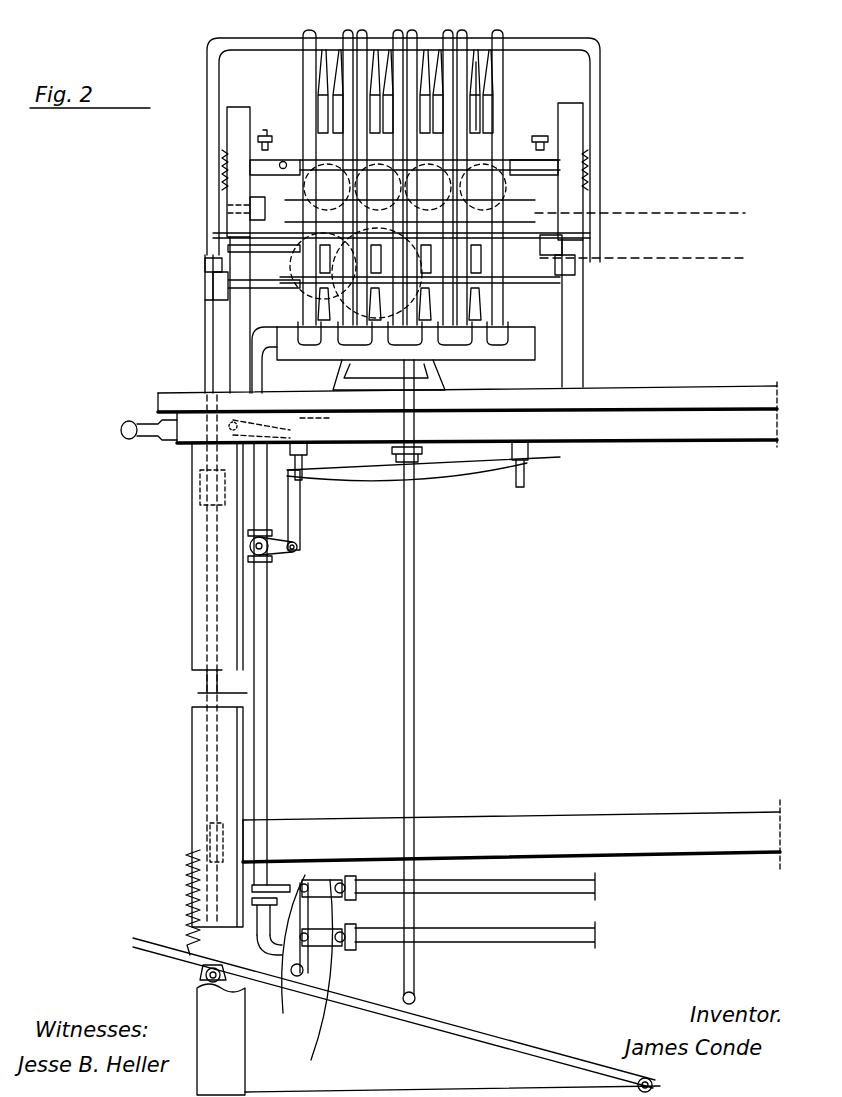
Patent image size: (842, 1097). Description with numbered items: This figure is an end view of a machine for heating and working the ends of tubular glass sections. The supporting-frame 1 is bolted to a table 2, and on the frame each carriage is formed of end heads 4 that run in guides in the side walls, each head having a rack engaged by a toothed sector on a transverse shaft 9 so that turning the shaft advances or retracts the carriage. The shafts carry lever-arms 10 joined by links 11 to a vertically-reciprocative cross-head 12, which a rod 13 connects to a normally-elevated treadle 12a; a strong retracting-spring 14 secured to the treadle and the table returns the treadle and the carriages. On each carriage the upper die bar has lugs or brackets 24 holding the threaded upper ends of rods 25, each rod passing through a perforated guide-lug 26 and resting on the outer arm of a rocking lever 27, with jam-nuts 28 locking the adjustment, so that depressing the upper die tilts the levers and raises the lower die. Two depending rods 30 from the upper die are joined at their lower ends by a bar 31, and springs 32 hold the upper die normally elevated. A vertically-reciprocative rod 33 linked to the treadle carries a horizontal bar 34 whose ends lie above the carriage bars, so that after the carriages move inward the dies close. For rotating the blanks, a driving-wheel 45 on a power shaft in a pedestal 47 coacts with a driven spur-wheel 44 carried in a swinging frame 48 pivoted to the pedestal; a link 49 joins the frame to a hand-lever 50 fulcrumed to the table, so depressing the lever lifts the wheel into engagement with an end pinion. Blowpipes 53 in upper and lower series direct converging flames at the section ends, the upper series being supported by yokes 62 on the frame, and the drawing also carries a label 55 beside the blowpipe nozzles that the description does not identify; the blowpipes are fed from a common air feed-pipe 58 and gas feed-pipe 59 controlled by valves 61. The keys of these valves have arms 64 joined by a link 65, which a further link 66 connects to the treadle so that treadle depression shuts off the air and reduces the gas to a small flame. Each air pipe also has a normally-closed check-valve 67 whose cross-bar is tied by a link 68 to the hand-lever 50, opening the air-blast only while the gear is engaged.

The supporting-frame 1 is at (238, 323).
The table 2 is at (666, 400).
The end heads 4 is at (238, 117).
The transverse shaft 9 is at (478, 70).
The lever-arms 10 is at (222, 270).
The links 11 is at (212, 350).
The cross-head 12 is at (200, 487).
The treadle 12a is at (362, 1000).
The rod 13 is at (210, 680).
The retracting-spring 14 is at (185, 900).
The lugs or brackets 24 is at (255, 167).
The rod 25 is at (228, 200).
The perforated guide-lug 26 is at (215, 235).
The rocking lever 27 is at (570, 258).
The jam-nuts 28 is at (266, 142).
The depending rods 30 is at (307, 456).
The bar 31 is at (468, 476).
The springs 32 is at (215, 178).
The vertically-reciprocative rod 33 is at (416, 680).
The horizontal bar 34 is at (415, 465).
The driven spur-wheel 44 is at (245, 250).
The driving-wheel 45 is at (395, 345).
The pedestal 47 is at (362, 393).
The swinging frame 48 is at (262, 275).
The link 49 is at (265, 367).
The hand-lever 50 is at (162, 440).
The blowpipes 53 is at (478, 125).
The finger 55 is at (405, 105).
The air feed-pipe 58 is at (267, 632).
The gas feed-pipe 59 is at (597, 888).
The valves 61 is at (350, 882).
The yokes 62 is at (548, 44).
The arms 64 is at (320, 880).
The link 65 is at (290, 957).
The link 66 is at (326, 980).
The check-valve 67 is at (273, 558).
The link 68 is at (297, 510).